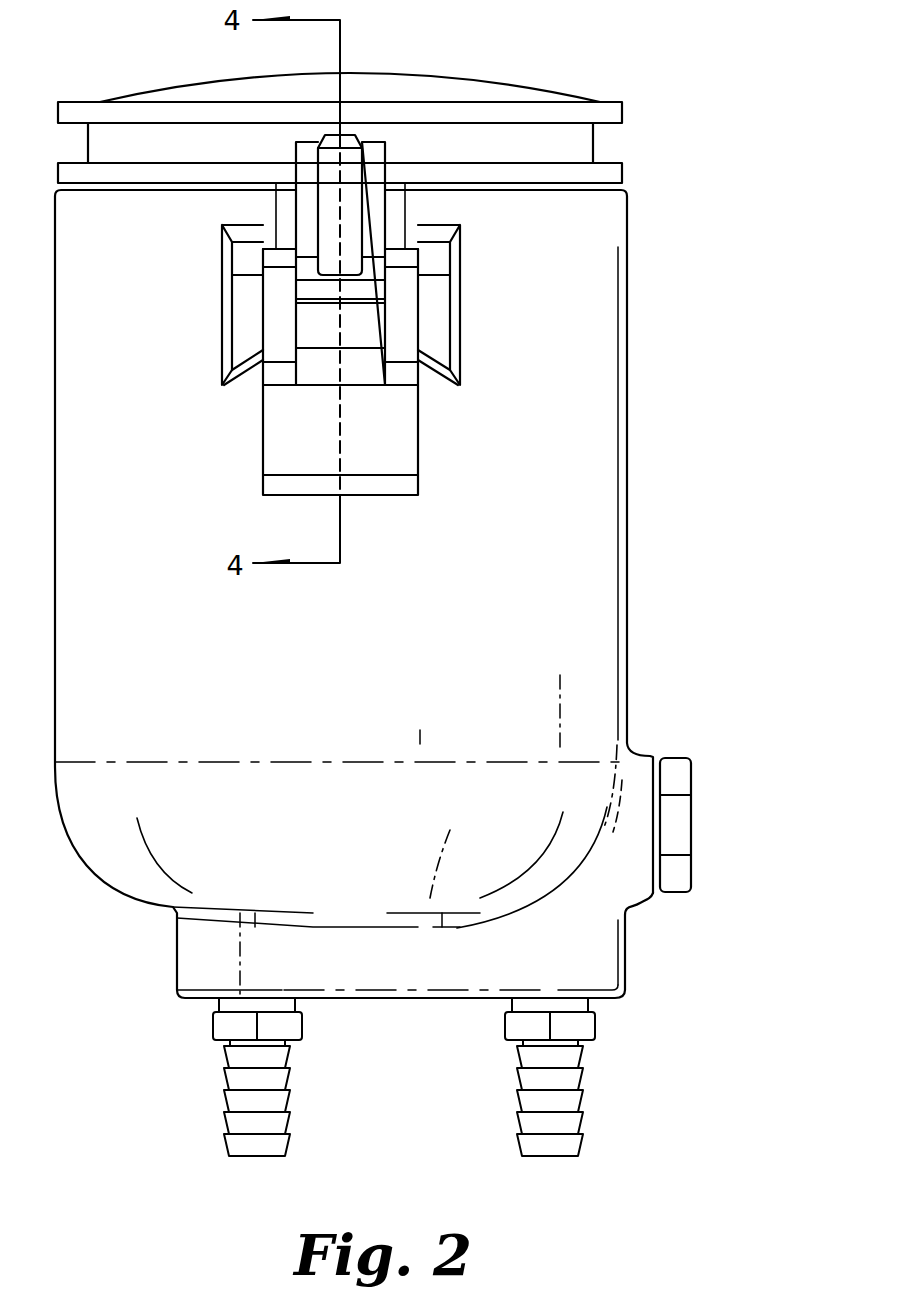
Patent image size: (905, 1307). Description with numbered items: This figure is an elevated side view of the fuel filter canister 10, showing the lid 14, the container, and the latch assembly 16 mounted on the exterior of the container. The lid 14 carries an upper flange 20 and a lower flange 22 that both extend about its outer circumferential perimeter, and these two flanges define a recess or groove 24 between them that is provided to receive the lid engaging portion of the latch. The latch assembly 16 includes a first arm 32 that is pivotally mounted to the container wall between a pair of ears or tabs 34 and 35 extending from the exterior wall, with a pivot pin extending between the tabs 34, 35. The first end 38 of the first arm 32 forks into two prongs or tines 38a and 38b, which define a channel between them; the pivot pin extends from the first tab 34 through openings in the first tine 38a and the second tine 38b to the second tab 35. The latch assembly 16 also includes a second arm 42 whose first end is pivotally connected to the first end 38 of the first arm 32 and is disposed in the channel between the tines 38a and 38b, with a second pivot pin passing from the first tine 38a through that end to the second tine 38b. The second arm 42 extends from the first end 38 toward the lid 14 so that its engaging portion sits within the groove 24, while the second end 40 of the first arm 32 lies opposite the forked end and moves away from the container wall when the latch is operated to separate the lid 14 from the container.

The fuel filter canister 10 is at (728, 306).
The lid 14 is at (227, 88).
The latch assembly 16 is at (227, 308).
The upper flange 20 is at (610, 112).
The lower flange 22 is at (620, 175).
The groove 24 is at (606, 139).
The first arm 32 is at (287, 430).
The first tab 34 is at (242, 333).
The second tab 35 is at (433, 333).
The first end of first arm 38 is at (353, 335).
The first tine 38a is at (279, 292).
The second tine 38b is at (405, 295).
The second end of first arm 40 is at (365, 477).
The second arm 42 is at (372, 195).